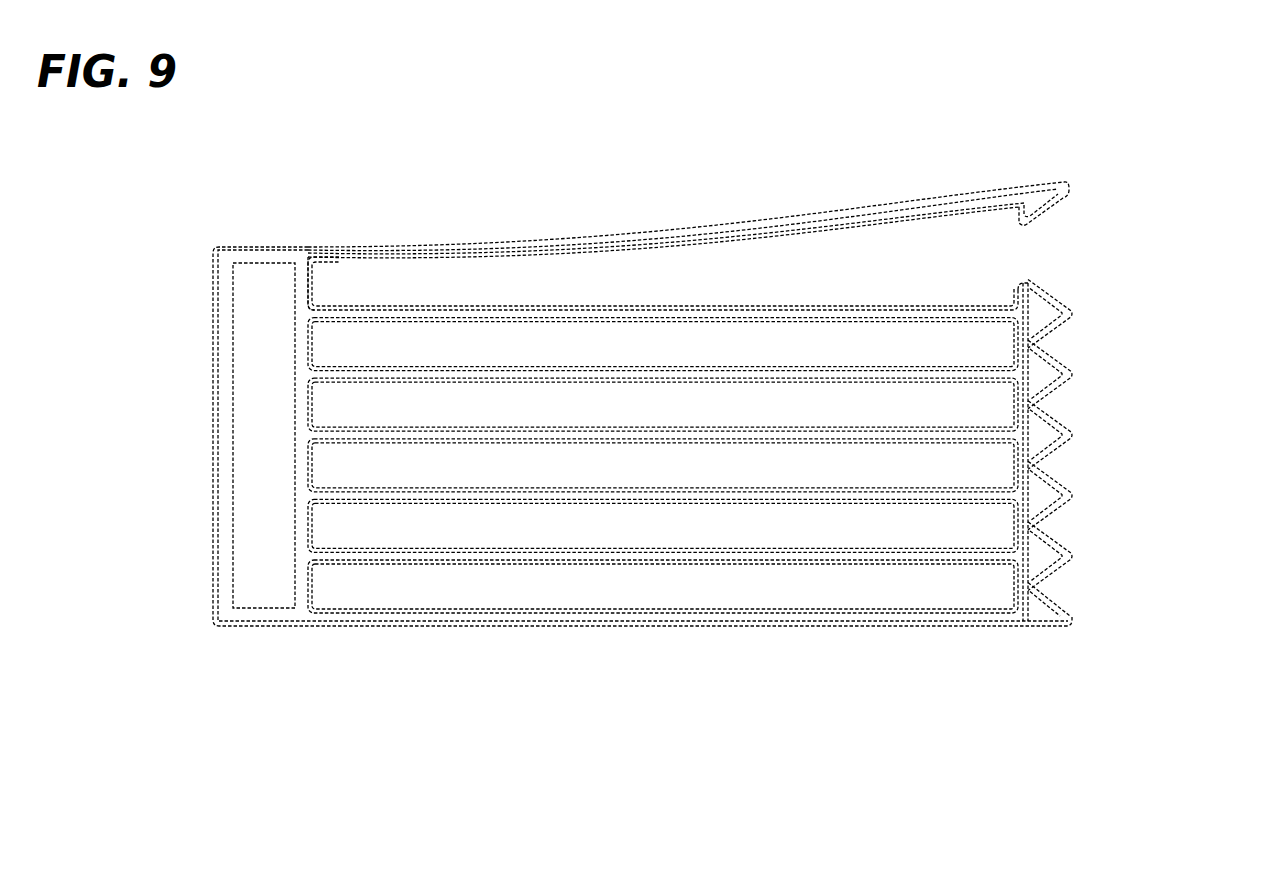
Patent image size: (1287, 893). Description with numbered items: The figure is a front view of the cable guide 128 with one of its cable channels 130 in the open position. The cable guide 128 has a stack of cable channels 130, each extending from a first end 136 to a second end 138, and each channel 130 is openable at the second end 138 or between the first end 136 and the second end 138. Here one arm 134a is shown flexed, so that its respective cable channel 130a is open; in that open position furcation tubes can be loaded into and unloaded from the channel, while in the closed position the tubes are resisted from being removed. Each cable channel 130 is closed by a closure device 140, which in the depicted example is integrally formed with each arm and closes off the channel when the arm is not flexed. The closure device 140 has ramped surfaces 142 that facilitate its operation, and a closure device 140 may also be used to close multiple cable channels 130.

The cable guide 128 is at (1148, 118).
The cable channel 130 is at (503, 532).
The cable channel 130a is at (869, 283).
The arm 134a is at (857, 212).
The first end 136 is at (362, 282).
The second end 138 is at (986, 285).
The closure device 140 is at (1035, 202).
The ramped surfaces 142 is at (1037, 218).